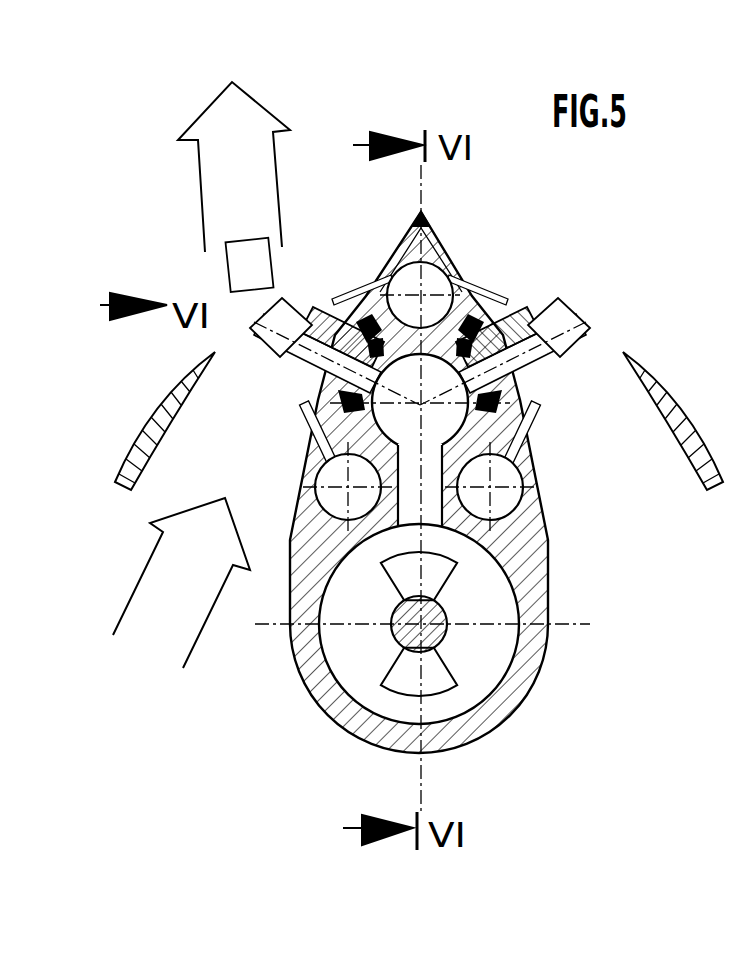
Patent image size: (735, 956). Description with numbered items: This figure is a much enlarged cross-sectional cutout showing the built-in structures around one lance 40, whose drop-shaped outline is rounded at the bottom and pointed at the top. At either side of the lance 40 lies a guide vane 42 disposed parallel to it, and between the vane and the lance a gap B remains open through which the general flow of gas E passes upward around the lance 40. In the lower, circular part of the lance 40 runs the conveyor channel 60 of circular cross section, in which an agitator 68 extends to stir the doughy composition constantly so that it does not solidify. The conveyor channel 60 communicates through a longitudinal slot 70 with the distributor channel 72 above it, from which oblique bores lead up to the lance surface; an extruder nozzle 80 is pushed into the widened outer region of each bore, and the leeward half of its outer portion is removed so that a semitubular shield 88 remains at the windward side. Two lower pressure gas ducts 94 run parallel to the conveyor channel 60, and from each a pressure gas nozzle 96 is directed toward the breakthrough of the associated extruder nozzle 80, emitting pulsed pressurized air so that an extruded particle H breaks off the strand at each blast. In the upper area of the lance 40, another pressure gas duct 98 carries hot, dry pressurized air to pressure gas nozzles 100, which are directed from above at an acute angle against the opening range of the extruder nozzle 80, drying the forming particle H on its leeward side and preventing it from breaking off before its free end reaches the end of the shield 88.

The lance 40 is at (556, 570).
The guide vane 42 is at (170, 410).
The conveyor channel 60 is at (497, 652).
The agitator 68 is at (455, 651).
The longitudinal slot 70 is at (440, 515).
The distributor channel 72 is at (490, 333).
The extruder nozzle 80 is at (318, 309).
The semitubular shield 88 is at (281, 387).
The lower pressure gas duct 94 is at (332, 493).
The pressure gas nozzle 96 is at (312, 438).
The upper pressure gas duct 98 is at (443, 270).
The pressure gas nozzle 100 is at (388, 270).
The gap B is at (240, 372).
The general flow of gas E is at (195, 180).
The extruded particle H is at (248, 255).